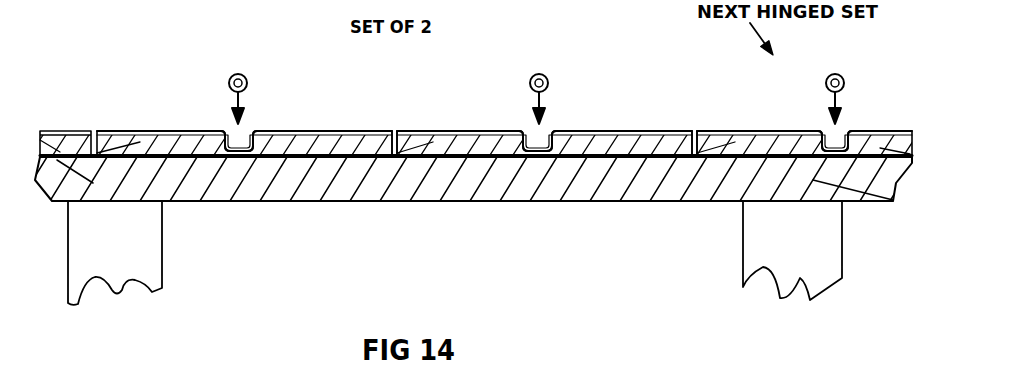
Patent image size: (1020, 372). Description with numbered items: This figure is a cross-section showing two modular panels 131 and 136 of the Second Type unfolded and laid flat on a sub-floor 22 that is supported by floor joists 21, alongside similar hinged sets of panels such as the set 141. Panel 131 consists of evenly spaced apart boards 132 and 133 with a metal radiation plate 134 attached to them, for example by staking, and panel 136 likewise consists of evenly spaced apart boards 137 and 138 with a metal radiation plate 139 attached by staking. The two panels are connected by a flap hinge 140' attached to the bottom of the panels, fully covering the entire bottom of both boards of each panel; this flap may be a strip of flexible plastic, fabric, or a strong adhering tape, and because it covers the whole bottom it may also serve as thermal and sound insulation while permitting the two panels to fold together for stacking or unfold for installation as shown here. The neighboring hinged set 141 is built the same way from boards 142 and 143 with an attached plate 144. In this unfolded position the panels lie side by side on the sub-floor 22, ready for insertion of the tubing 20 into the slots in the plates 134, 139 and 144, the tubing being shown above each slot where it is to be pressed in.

The tubing 20 is at (231, 76).
The floor joist 21 is at (162, 262).
The sub-floor 22 is at (373, 200).
The modular panel 131 is at (280, 106).
The board 132 is at (163, 143).
The board 133 is at (343, 148).
The metal radiation plate 134 is at (122, 130).
The modular panel 136 is at (586, 106).
The board 137 is at (488, 147).
The board 138 is at (630, 147).
The metal radiation plate 139 is at (430, 129).
The flap hinge 140' is at (438, 193).
The hinged set of panels 141 is at (865, 104).
The board 142 is at (780, 147).
The board 143 is at (880, 150).
The plate 144 is at (718, 132).